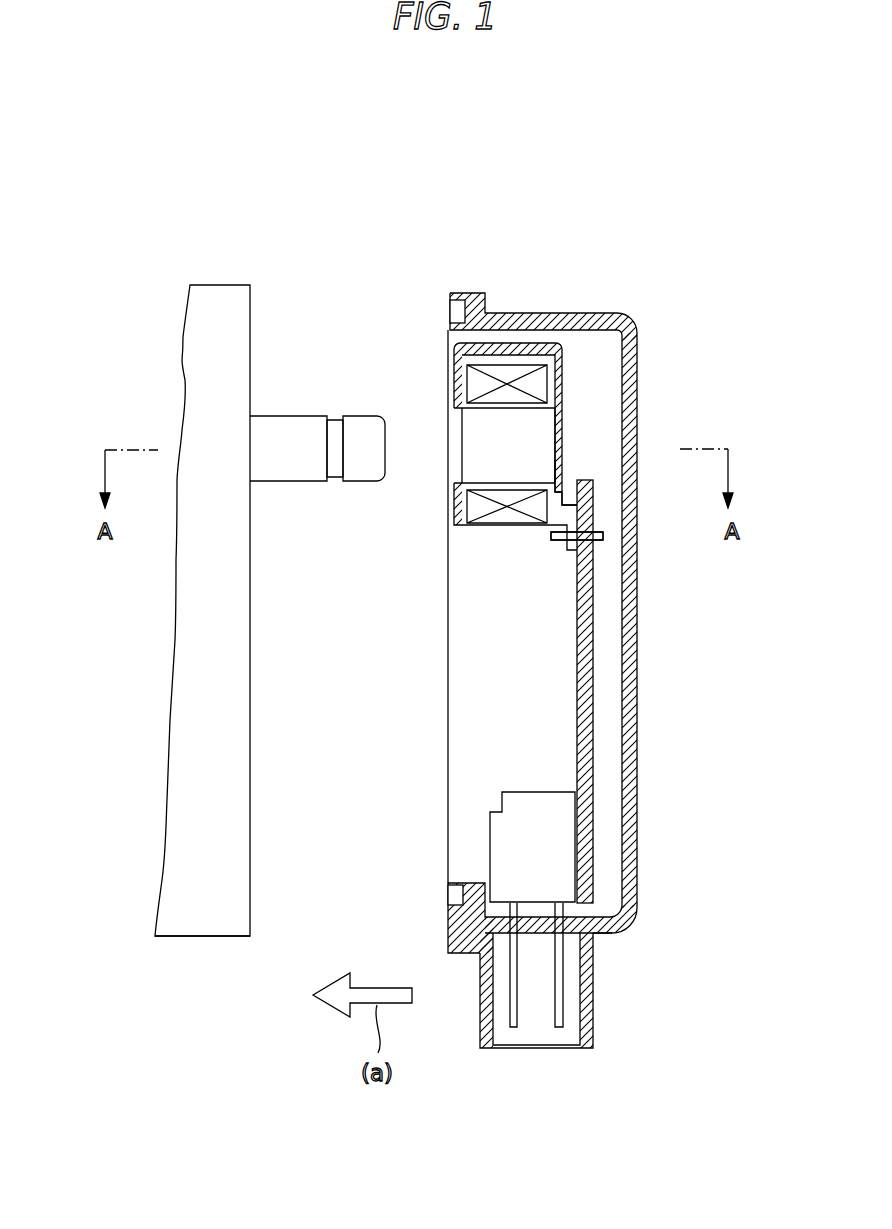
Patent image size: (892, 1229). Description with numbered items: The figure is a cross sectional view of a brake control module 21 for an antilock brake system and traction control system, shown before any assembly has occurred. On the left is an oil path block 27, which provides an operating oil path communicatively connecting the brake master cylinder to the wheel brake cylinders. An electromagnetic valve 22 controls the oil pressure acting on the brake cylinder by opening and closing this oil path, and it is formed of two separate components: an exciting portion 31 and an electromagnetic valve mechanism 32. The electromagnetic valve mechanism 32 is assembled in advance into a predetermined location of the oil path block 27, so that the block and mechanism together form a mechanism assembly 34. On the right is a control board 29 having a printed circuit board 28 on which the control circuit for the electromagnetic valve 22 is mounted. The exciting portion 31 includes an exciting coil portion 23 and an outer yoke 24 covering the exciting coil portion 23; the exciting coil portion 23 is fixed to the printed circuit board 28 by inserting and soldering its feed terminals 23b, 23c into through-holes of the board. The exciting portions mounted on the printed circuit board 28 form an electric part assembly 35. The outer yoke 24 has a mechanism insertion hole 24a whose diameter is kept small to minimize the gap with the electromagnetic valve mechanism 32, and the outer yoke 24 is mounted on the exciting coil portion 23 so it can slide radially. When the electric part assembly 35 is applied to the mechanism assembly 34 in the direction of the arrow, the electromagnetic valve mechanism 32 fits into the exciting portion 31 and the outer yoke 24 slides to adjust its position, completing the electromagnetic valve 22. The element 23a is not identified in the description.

The brake control module 21 is at (494, 256).
The electromagnetic valve 22 is at (297, 612).
The exciting coil portion 23 is at (475, 383).
The bobbin 23a is at (492, 483).
The feed terminal 23b is at (607, 555).
The feed terminal 23c is at (690, 579).
The outer yoke 24 is at (458, 344).
The mechanism insertion hole 24a is at (562, 481).
The oil path block 27 is at (229, 290).
The printed circuit board 28 is at (593, 680).
The control board 29 is at (580, 847).
The exciting portion 31 is at (502, 518).
The electromagnetic valve mechanism 32 is at (298, 473).
The mechanism assembly 34 is at (205, 938).
The electric part assembly 35 is at (612, 927).